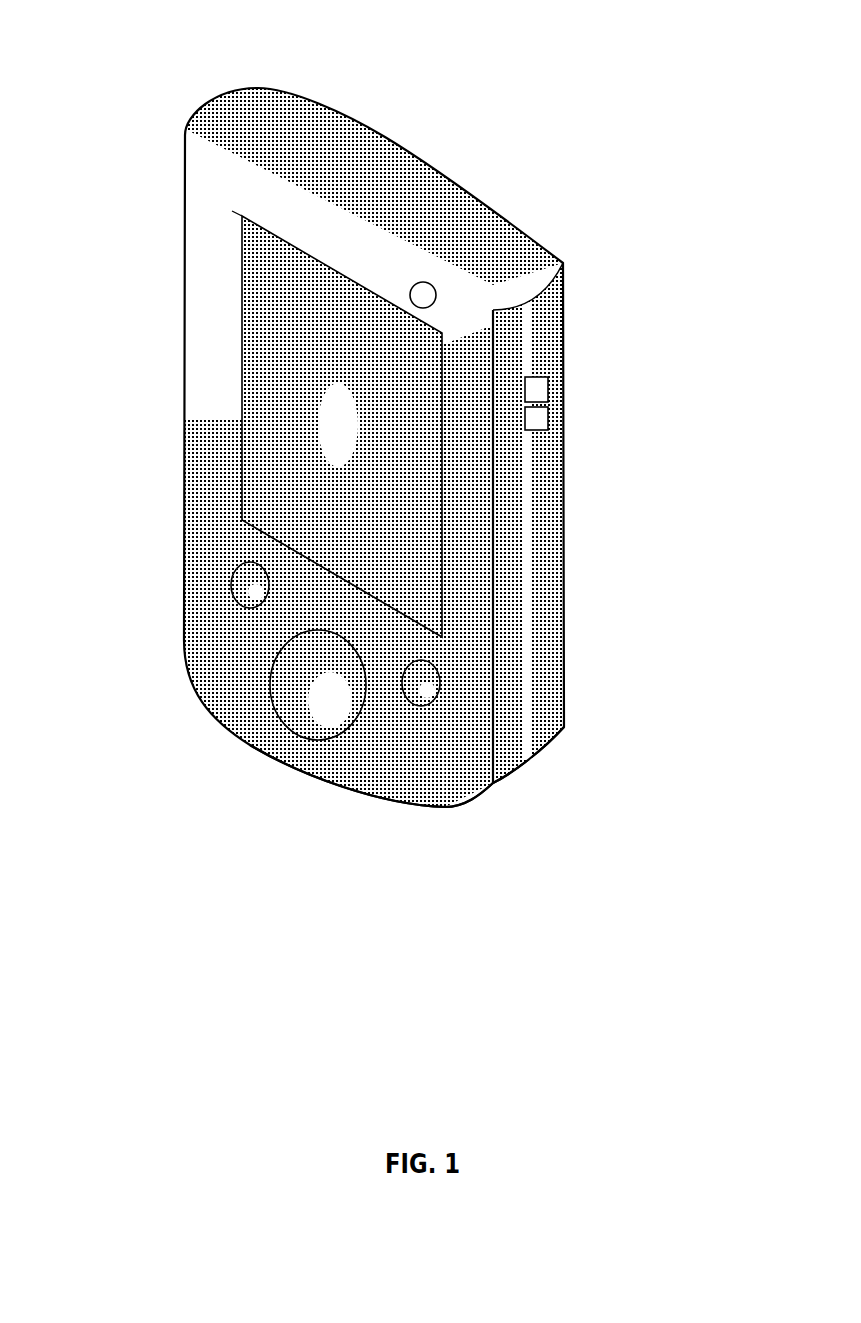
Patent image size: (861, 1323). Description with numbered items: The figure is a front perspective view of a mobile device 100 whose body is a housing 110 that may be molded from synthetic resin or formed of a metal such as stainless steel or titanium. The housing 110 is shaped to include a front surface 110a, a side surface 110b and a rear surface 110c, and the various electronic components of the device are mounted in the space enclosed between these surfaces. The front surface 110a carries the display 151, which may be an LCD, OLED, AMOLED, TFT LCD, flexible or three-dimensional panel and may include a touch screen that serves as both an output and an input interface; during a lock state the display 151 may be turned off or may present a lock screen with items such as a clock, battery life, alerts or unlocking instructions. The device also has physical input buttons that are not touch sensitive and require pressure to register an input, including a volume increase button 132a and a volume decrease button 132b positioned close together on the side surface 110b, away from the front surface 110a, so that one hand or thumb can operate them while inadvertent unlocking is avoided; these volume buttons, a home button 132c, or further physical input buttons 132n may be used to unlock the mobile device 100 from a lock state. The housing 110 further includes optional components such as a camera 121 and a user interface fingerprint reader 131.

The mobile device 100 is at (112, 125).
The housing 110 is at (395, 175).
The front surface 110a is at (205, 478).
The side surface 110b is at (527, 688).
The rear surface 110c is at (566, 575).
The camera 121 is at (412, 298).
The display 151 is at (298, 327).
The user interface fingerprint reader 131 is at (310, 747).
The volume increase button 132a is at (548, 388).
The volume decrease button 132b is at (548, 424).
The home button 132c is at (233, 598).
The physical input button 132n is at (440, 690).